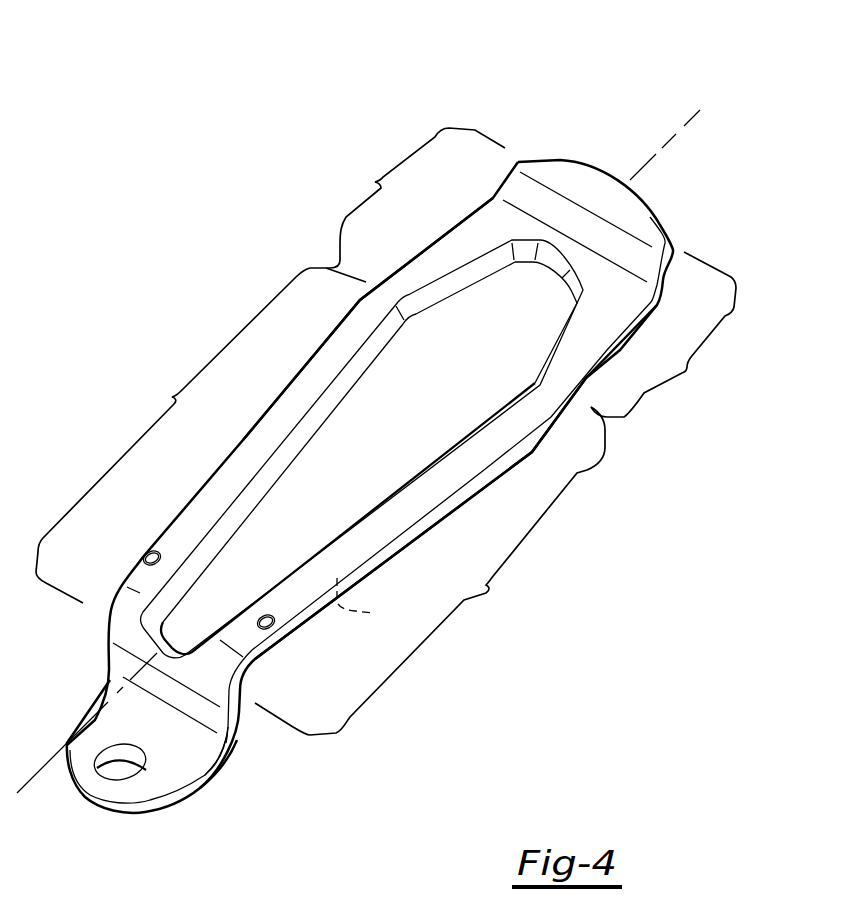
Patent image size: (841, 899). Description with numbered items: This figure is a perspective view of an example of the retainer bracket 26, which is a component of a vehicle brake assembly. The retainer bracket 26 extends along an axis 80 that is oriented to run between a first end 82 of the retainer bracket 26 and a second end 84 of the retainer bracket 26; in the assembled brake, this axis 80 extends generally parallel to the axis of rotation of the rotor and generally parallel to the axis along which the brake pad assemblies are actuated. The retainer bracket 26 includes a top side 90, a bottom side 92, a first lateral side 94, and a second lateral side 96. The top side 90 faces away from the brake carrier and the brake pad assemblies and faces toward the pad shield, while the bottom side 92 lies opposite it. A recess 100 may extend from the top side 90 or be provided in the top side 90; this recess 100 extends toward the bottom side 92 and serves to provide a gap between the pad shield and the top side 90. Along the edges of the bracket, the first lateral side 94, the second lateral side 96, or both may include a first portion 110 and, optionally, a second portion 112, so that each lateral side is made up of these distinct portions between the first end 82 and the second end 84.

The retainer bracket 26 is at (547, 160).
The axis 80 is at (685, 118).
The first end 82 is at (611, 170).
The second end 84 is at (86, 794).
The top side 90 is at (335, 569).
The bottom side 92 is at (363, 611).
The first lateral side 94 is at (364, 301).
The second lateral side 96 is at (529, 452).
The recess 100 is at (385, 459).
The first portion 110 is at (320, 501).
The second portion 112 is at (523, 272).